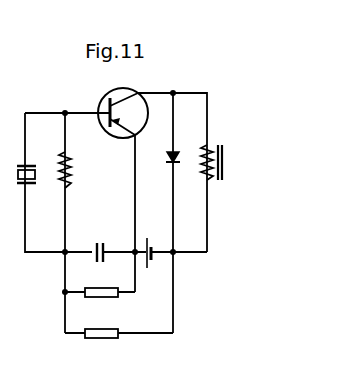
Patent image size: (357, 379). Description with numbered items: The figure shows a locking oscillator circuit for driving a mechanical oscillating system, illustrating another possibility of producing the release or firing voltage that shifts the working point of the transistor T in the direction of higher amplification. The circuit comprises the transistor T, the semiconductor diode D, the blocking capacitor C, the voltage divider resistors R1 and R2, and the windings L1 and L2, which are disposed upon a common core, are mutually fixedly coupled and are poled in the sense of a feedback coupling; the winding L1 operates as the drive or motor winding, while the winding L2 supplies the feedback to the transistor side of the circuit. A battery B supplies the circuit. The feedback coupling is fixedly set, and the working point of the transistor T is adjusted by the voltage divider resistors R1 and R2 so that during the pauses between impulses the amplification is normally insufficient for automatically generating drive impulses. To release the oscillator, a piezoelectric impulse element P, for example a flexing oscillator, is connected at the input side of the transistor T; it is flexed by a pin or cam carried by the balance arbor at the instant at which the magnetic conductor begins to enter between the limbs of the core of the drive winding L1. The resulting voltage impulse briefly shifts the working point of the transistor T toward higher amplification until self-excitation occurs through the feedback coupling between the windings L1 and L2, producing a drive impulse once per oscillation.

The transistor T is at (107, 96).
The semiconductor diode D is at (168, 148).
The drive or motor winding L1 is at (222, 162).
The piezoelectric impulse element P is at (24, 167).
The winding L2 is at (74, 170).
The blocking capacitor C is at (100, 244).
The battery B is at (152, 245).
The voltage divider resistor R1 is at (101, 286).
The voltage divider resistor R2 is at (101, 326).